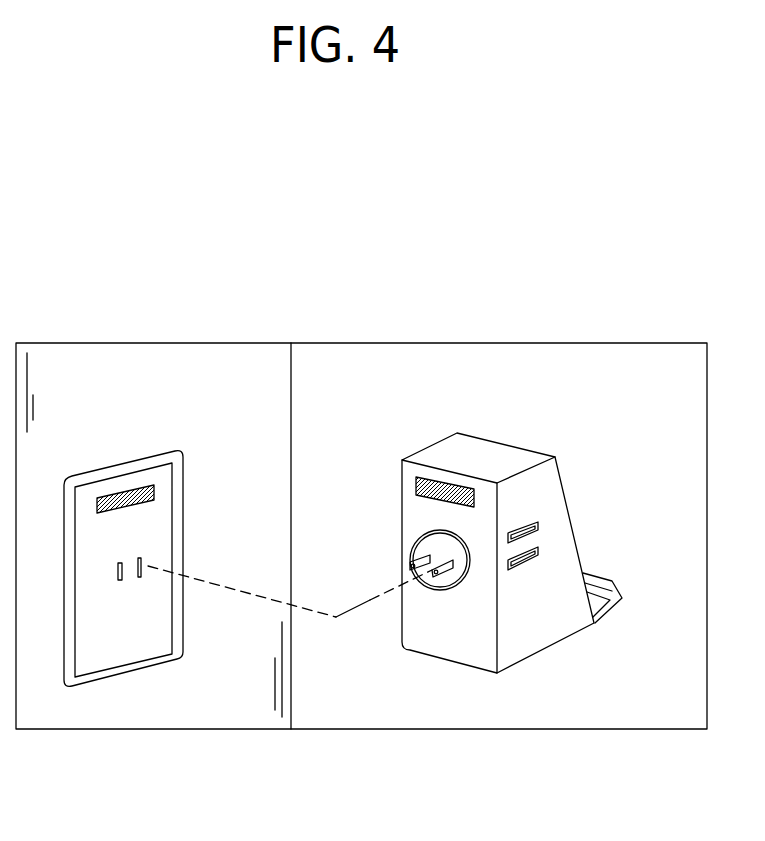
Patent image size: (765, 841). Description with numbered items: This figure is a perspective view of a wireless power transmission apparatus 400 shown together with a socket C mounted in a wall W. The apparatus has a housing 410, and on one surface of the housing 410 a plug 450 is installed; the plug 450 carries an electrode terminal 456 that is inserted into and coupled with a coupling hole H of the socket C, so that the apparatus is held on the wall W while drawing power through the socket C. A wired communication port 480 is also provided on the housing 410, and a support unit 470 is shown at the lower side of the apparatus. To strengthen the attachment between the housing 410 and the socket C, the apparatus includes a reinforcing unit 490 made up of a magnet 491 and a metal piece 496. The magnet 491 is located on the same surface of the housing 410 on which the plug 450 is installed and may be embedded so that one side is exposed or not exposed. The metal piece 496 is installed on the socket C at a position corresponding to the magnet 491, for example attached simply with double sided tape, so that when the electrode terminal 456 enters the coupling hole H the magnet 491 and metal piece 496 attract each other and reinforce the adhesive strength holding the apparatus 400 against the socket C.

The wireless power transmission apparatus 400 is at (509, 515).
The housing 410 is at (478, 447).
The plug 450 is at (416, 587).
The electrode terminal 456 is at (410, 563).
The support unit 470 is at (618, 590).
The wired communication port 480 is at (538, 521).
The reinforcing unit 490 is at (403, 478).
The magnet 491 is at (412, 487).
The metal piece 496 is at (154, 493).
The wall W is at (258, 390).
The coupling hole H is at (124, 579).
The socket C is at (188, 584).